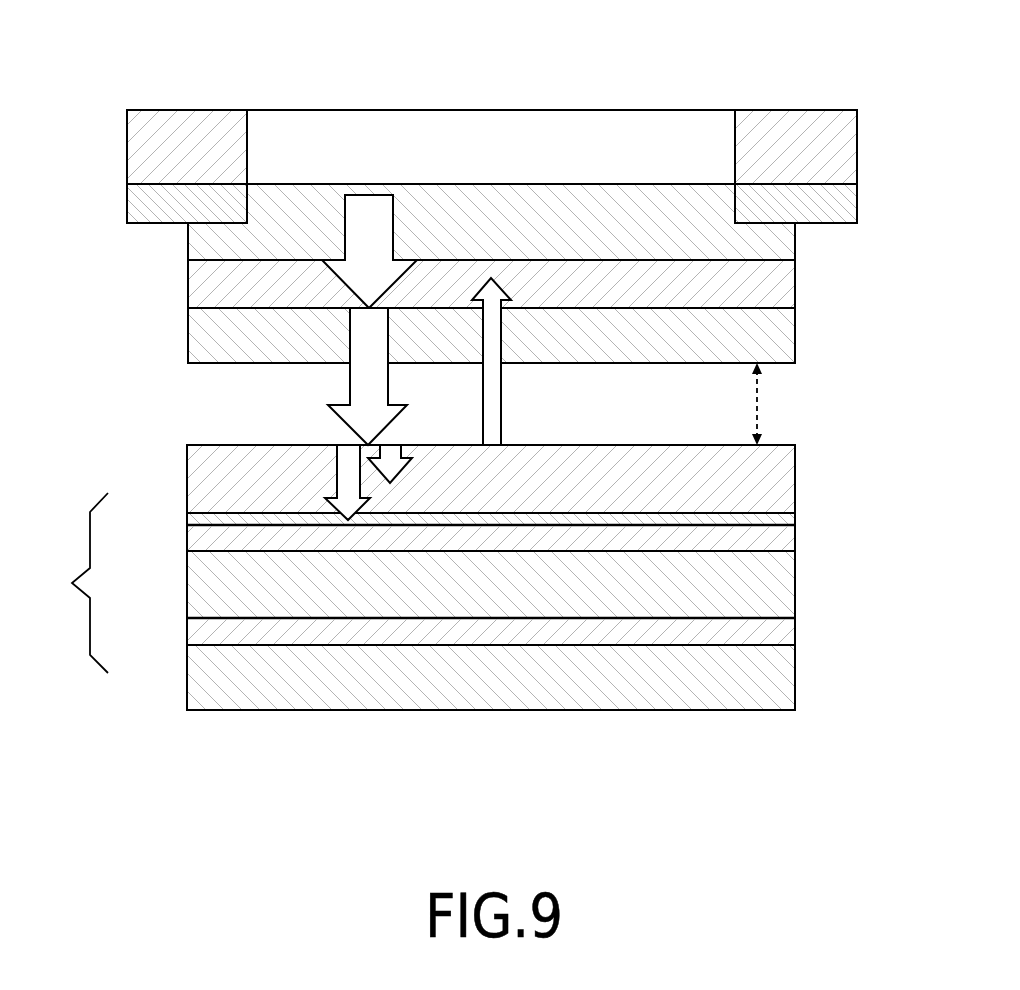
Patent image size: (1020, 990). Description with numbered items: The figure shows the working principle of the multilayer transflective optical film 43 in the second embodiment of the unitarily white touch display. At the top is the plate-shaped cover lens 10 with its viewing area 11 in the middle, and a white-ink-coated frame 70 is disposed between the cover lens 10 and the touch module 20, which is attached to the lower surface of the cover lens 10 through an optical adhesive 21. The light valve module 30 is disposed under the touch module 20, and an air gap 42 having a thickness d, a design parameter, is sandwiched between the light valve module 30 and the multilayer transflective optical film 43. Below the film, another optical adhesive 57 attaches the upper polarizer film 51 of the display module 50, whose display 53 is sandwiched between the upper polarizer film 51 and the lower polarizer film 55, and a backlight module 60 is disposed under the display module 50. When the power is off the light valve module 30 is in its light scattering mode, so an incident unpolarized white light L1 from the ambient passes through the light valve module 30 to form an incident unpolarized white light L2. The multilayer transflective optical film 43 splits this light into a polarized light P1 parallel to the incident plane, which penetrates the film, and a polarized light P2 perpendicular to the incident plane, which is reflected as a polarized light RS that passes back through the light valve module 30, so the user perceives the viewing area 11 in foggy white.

The cover lens 10 is at (193, 78).
The viewing area 11 is at (507, 160).
The frame 70 is at (143, 204).
The optical adhesive 21 is at (205, 245).
The touch module 20 is at (205, 288).
The light valve module 30 is at (775, 335).
The air gap 42 is at (674, 423).
The multilayer transflective optical film 43 is at (775, 473).
The optical adhesive 57 is at (775, 520).
The display module 50 is at (416, 583).
The upper polarizer film 51 is at (210, 540).
The display 53 is at (210, 587).
The lower polarizer film 55 is at (210, 631).
The backlight module 60 is at (775, 680).
The incident unpolarized white light L1 is at (357, 195).
The incident unpolarized white light L2 is at (350, 340).
The polarized light P1 is at (335, 480).
The polarized light P2 is at (402, 452).
The polarized light RS is at (501, 420).
The thickness d is at (747, 404).